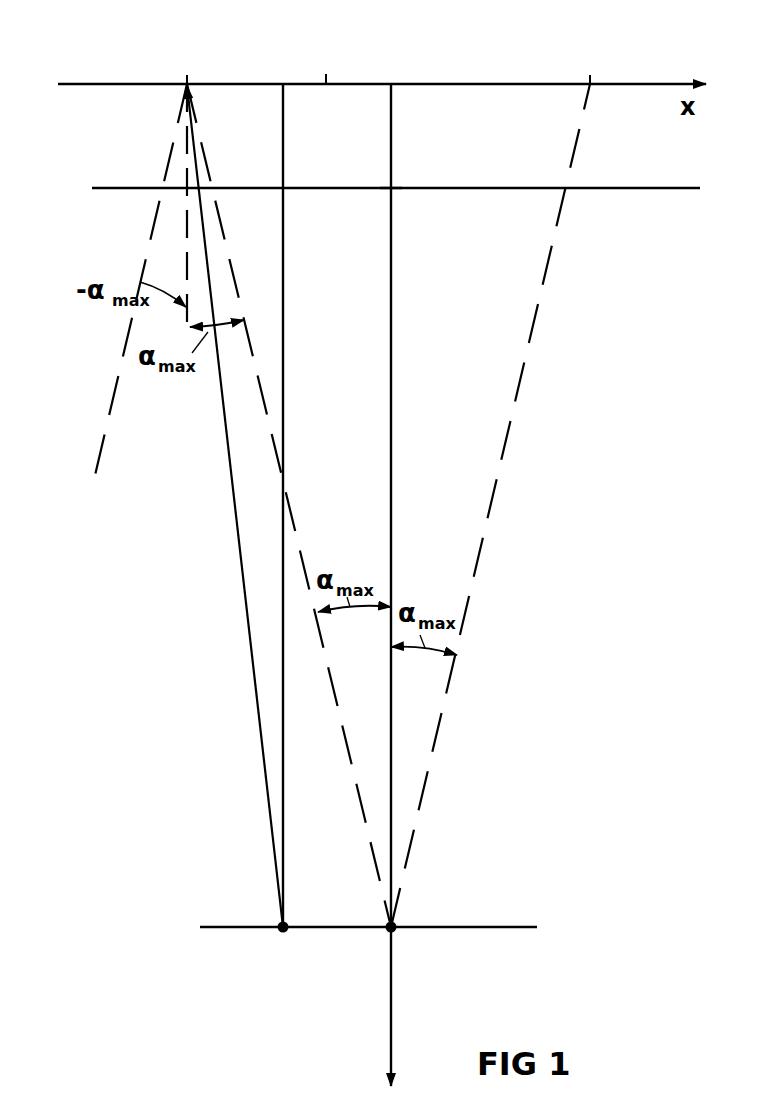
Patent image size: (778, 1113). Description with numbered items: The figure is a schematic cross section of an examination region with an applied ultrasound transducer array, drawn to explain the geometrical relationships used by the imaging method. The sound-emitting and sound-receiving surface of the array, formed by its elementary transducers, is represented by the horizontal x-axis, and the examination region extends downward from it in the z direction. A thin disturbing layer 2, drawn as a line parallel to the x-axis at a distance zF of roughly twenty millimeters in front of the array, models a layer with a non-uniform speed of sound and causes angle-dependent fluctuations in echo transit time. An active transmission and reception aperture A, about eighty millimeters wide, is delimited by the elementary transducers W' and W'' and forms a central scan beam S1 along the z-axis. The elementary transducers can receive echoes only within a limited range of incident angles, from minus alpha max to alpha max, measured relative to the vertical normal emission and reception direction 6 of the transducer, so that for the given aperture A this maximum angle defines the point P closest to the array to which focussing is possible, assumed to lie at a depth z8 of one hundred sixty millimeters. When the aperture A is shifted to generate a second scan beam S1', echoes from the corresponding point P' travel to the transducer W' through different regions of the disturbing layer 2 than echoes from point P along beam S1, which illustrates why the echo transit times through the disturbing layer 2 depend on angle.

The thin disturbing layer 2 is at (617, 190).
The vertical (normal) emission and reception direction 6 is at (185, 245).
The central transmission and reception beam (scan beam) S1 is at (418, 585).
The scan beam S1' is at (317, 505).
The distance of disturbing layer zF is at (390, 190).
The depth of point P z8 is at (368, 927).
The point P is at (408, 912).
The point P' is at (301, 912).
The active transmission and reception aperture A is at (326, 64).
The elementary transducer W' is at (189, 64).
The elementary transducer W'' is at (593, 64).